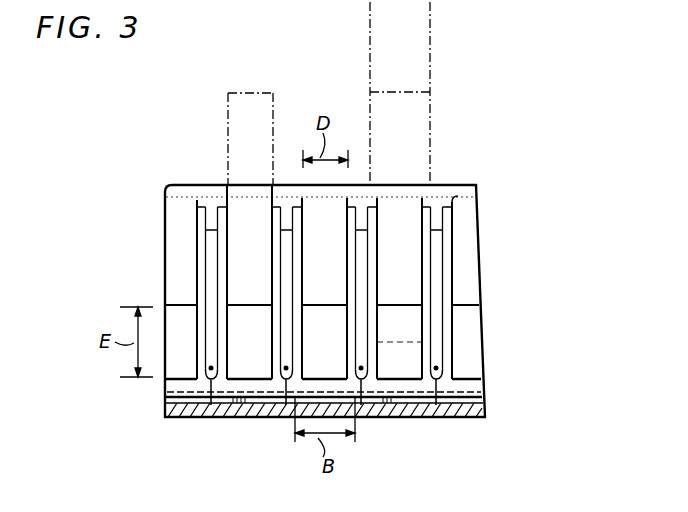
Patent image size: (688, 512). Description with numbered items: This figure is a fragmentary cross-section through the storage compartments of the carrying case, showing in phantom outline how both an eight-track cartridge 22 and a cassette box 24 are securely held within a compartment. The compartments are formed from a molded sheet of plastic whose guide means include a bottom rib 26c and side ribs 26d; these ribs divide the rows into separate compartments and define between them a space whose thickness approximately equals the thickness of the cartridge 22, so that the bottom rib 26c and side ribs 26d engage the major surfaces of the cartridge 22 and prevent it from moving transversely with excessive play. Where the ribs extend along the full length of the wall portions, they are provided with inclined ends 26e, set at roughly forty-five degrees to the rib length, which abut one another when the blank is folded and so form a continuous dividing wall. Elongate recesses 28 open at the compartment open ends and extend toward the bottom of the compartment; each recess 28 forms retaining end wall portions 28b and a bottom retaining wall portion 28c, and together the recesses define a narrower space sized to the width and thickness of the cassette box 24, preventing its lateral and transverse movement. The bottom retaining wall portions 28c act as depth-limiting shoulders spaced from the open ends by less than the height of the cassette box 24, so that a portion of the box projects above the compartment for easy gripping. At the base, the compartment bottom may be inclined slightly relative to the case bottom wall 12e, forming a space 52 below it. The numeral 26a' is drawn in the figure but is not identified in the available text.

The bottom wall 12e is at (464, 420).
The 8-track cartridge 22 is at (414, 65).
The cassette box 24 is at (229, 127).
The bottom contact layer 26a' is at (323, 433).
The bottom rib 26c is at (290, 368).
The side ribs 26d is at (282, 346).
The inclined ends 26e is at (476, 195).
The elongate recesses 28 is at (256, 240).
The retaining end wall portions 28b is at (343, 260).
The bottom retaining wall portion 28c is at (171, 301).
The space 52 is at (480, 403).